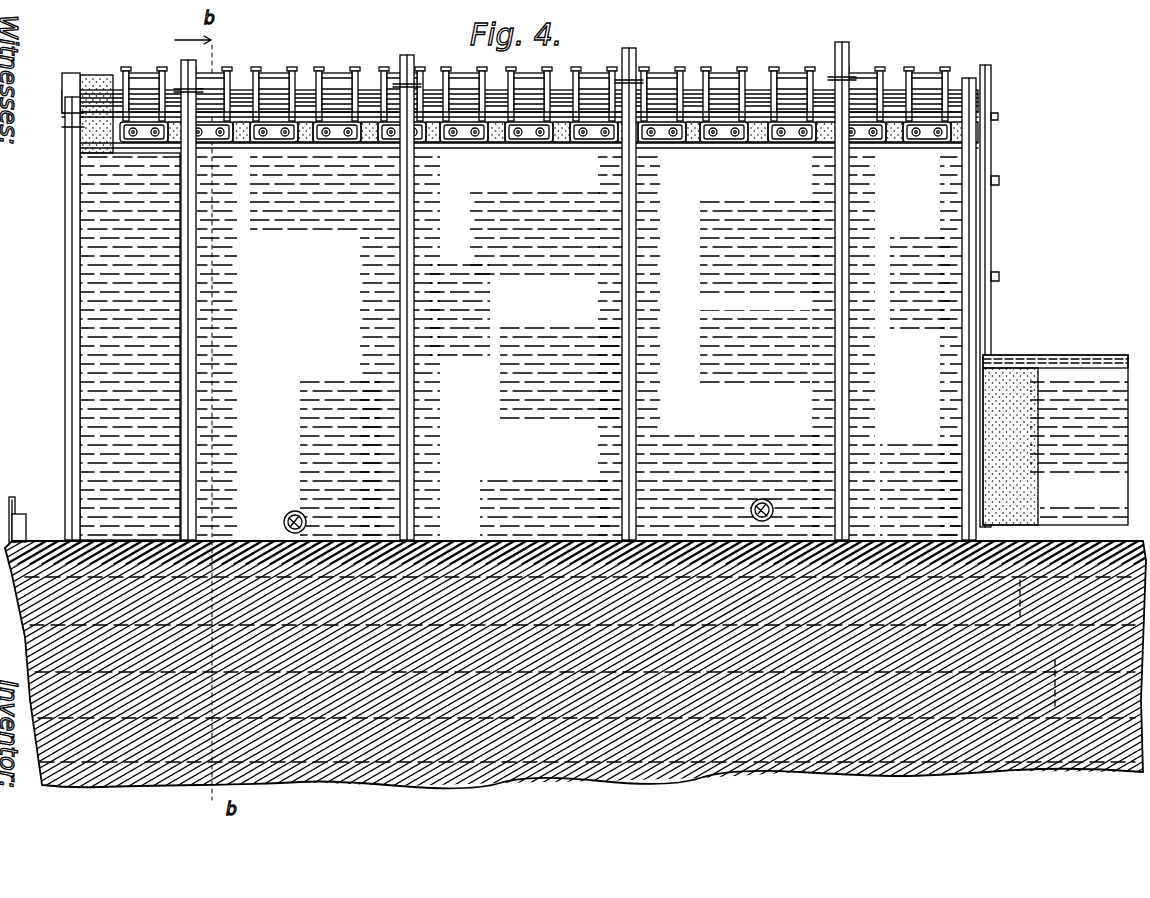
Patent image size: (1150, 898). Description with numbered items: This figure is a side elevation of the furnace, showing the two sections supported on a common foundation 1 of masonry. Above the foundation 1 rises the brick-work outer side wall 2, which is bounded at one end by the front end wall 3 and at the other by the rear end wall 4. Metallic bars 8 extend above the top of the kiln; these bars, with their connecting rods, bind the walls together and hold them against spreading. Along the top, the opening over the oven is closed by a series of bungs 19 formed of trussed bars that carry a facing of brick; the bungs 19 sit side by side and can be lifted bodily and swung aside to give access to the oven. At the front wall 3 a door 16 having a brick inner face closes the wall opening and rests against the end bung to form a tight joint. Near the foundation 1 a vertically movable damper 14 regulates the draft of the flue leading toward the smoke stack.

The foundation 1 is at (610, 767).
The outer side wall 2 is at (108, 318).
The front end wall 3 is at (963, 231).
The rear end wall 4 is at (82, 241).
The metallic bars 8 is at (70, 97).
The damper 14 is at (15, 504).
The door 16 is at (990, 155).
The bungs 19 is at (325, 70).